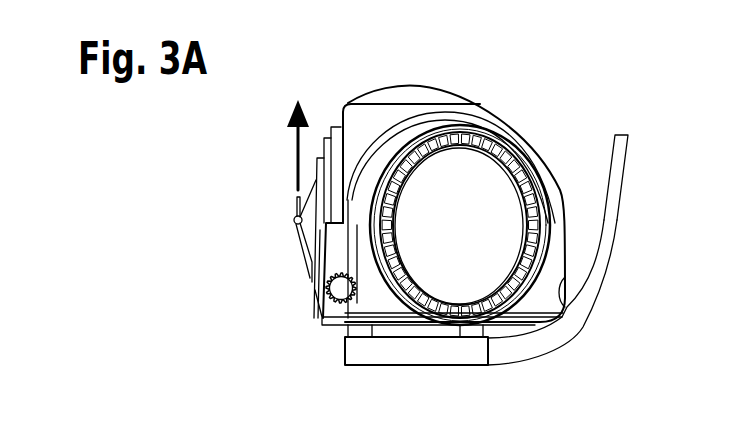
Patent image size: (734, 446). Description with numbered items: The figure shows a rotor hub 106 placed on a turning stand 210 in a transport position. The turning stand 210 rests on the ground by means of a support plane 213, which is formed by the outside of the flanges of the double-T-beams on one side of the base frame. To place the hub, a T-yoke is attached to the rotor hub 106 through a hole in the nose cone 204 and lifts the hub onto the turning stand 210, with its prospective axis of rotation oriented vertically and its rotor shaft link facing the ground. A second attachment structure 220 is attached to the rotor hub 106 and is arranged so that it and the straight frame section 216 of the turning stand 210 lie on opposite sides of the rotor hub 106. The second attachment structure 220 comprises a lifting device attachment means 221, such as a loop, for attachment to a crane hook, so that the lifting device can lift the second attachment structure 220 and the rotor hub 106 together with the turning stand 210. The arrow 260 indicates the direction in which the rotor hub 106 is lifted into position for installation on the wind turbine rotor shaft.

The nose cone 204 is at (406, 87).
The rotor hub 106 is at (513, 118).
The arrow 260 is at (296, 150).
The lifting device attachment means 221 is at (294, 208).
The second attachment structure 220 is at (308, 232).
The support plane 213 is at (381, 366).
The straight frame section 216 is at (622, 165).
The turning stand 210 is at (569, 353).